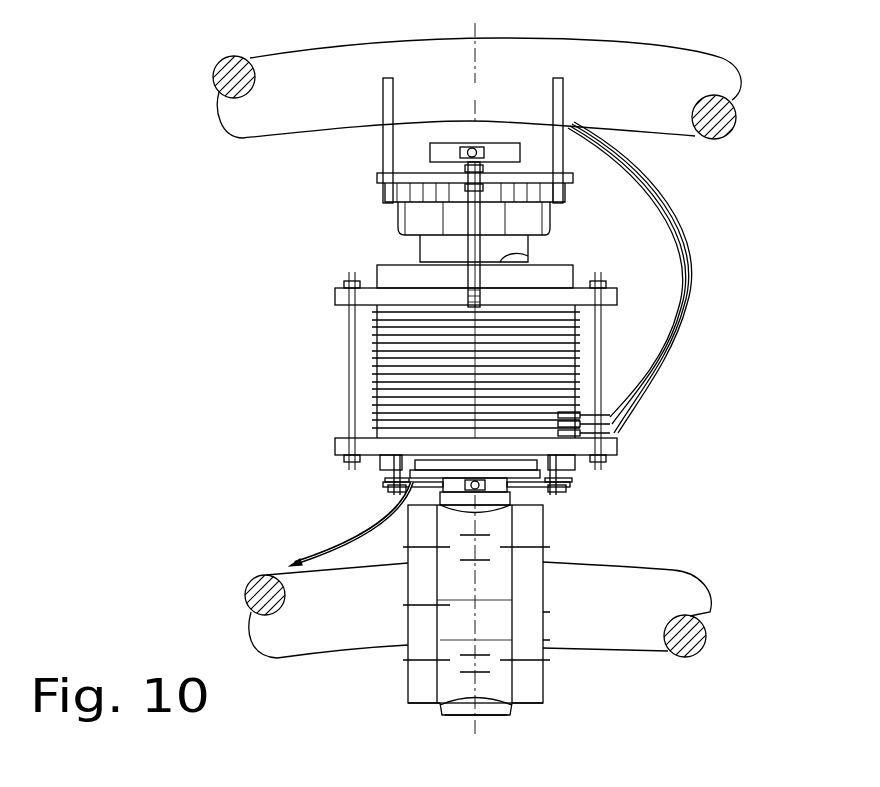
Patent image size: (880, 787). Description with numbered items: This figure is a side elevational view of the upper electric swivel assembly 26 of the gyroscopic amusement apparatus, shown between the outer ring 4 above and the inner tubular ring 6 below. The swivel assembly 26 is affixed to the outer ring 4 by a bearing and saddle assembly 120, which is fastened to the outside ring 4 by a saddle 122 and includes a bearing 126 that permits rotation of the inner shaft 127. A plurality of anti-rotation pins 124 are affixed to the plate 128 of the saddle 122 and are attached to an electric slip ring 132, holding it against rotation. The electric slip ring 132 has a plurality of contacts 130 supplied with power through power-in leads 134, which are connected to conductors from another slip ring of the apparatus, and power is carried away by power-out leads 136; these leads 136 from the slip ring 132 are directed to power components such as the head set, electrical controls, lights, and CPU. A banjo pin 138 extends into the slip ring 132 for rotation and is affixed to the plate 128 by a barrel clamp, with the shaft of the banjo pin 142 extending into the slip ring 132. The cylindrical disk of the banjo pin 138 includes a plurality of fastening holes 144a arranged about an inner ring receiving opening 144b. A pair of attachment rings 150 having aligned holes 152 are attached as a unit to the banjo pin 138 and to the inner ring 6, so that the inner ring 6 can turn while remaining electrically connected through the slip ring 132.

The outer ring 4 is at (605, 65).
The inner tubular ring 6 is at (613, 577).
The upper electric swivel assembly 26 is at (703, 298).
The bearing and saddle assembly 120 is at (515, 192).
The saddle 122 is at (382, 130).
The anti-rotation pins 124 is at (420, 246).
The bearing 126 is at (543, 222).
The inner shaft 127 is at (495, 258).
The plate 128 is at (570, 180).
The contacts 130 is at (580, 370).
The electric slip ring 132 is at (580, 323).
The power-in leads 134 is at (675, 219).
The power-out leads 136 is at (330, 550).
The banjo pin 138 is at (543, 515).
The shaft of the banjo pin 142 is at (533, 630).
The fastening holes 144a is at (457, 654).
The inner ring receiving opening 144b is at (450, 604).
The attachment rings 150 is at (423, 707).
The aligned holes 152 is at (543, 678).